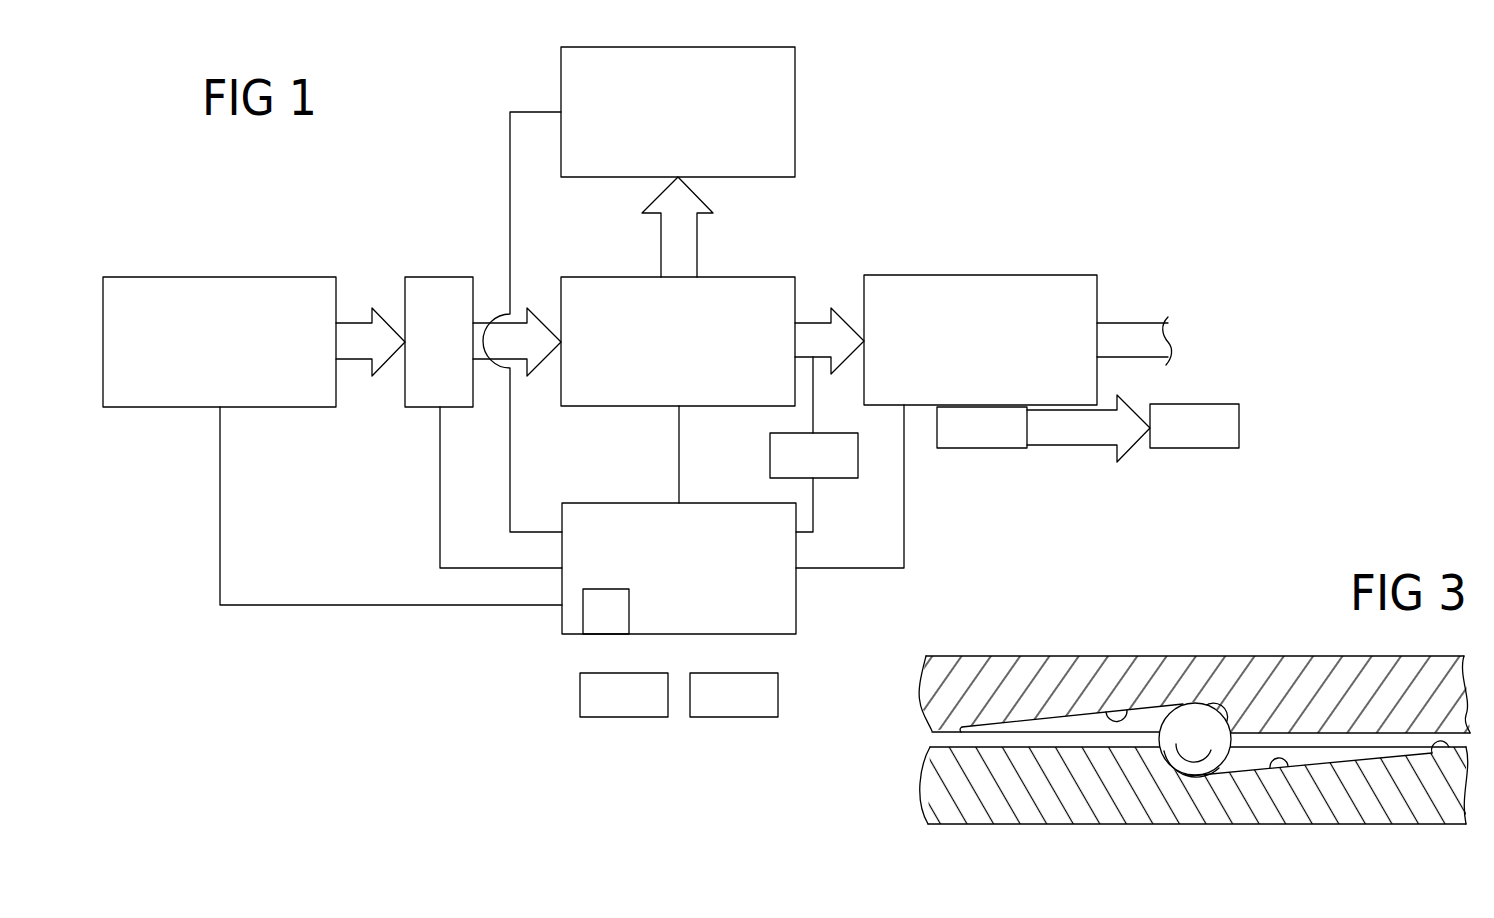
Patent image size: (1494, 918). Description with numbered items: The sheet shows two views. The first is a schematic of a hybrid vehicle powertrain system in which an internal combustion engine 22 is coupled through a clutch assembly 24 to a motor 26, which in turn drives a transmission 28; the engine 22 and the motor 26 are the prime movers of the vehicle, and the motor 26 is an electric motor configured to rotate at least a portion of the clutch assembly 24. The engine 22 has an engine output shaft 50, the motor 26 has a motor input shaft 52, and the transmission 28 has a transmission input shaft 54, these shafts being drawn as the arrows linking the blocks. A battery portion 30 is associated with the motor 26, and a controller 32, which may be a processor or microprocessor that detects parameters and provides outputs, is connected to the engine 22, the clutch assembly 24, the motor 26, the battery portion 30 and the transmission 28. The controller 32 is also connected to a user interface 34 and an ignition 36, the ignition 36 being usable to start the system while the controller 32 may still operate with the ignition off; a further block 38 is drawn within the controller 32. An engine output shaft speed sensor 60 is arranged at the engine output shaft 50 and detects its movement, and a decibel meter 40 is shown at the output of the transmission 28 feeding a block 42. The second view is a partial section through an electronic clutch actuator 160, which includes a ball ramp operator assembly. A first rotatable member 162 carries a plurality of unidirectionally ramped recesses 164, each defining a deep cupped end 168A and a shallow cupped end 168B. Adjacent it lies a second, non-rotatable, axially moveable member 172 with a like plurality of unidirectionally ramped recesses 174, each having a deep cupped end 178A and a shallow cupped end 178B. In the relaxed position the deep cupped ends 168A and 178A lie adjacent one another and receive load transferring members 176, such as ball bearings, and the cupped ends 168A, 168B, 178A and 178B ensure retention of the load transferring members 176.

In FIG. 1, the internal combustion engine 22 is at (204, 355).
In FIG. 1, the clutch assembly 24 is at (423, 355).
In FIG. 1, the motor 26 is at (662, 355).
In FIG. 1, the transmission 28 is at (964, 355).
In FIG. 1, the battery portion 30 is at (662, 126).
In FIG. 1, the controller 32 is at (662, 582).
In FIG. 1, the user interface 34 is at (718, 709).
In FIG. 1, the ignition 36 is at (608, 709).
In FIG. 1, the memory 38 is at (590, 626).
In FIG. 1, the decibel meter 40 is at (966, 442).
In FIG. 1, the destination 42 is at (1179, 440).
In FIG. 1, the engine output shaft 50 is at (353, 337).
In FIG. 1, the motor input shaft 52 is at (546, 342).
In FIG. 1, the transmission input shaft 54 is at (813, 335).
In FIG. 1, the engine output shaft speed sensor 60 is at (798, 470).
In FIG. 3, the electronic clutch actuator 160 is at (1222, 614).
In FIG. 3, the first rotatable member 162 is at (1075, 666).
In FIG. 3, the unidirectionally ramped recesses 164 is at (1124, 710).
In FIG. 3, the deep cupped end 168A is at (1226, 712).
In FIG. 3, the shallow cupped end 168B is at (963, 727).
In FIG. 3, the second axially moveable member 172 is at (1285, 815).
In FIG. 3, the unidirectionally ramped recesses 174 is at (1273, 770).
In FIG. 3, the load transferring members 176 is at (1158, 748).
In FIG. 3, the deep cupped end 178A is at (1184, 774).
In FIG. 3, the shallow cupped end 178B is at (1420, 758).